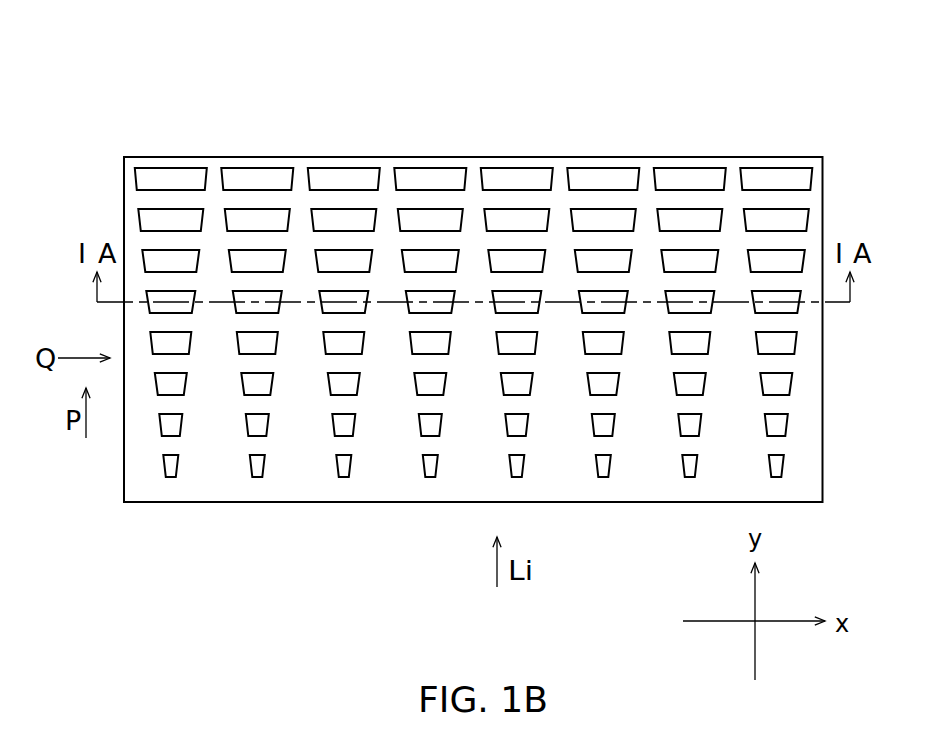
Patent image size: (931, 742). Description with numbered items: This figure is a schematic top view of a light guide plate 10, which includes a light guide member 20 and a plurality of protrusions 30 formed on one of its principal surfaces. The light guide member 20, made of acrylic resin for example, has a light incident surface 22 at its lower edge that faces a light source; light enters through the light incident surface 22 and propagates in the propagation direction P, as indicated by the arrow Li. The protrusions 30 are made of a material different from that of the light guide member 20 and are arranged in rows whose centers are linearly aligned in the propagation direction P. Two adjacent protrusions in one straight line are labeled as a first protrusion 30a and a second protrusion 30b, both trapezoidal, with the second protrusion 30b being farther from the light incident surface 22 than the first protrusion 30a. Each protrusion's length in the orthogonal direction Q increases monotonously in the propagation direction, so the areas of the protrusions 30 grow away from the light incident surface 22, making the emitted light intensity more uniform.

The light guide plate 10 is at (693, 78).
The light guide member 20 is at (420, 128).
The light incident surface 22 is at (211, 502).
The protrusions 30 is at (517, 167).
The first protrusion 30a is at (807, 218).
The second protrusion 30b is at (811, 178).